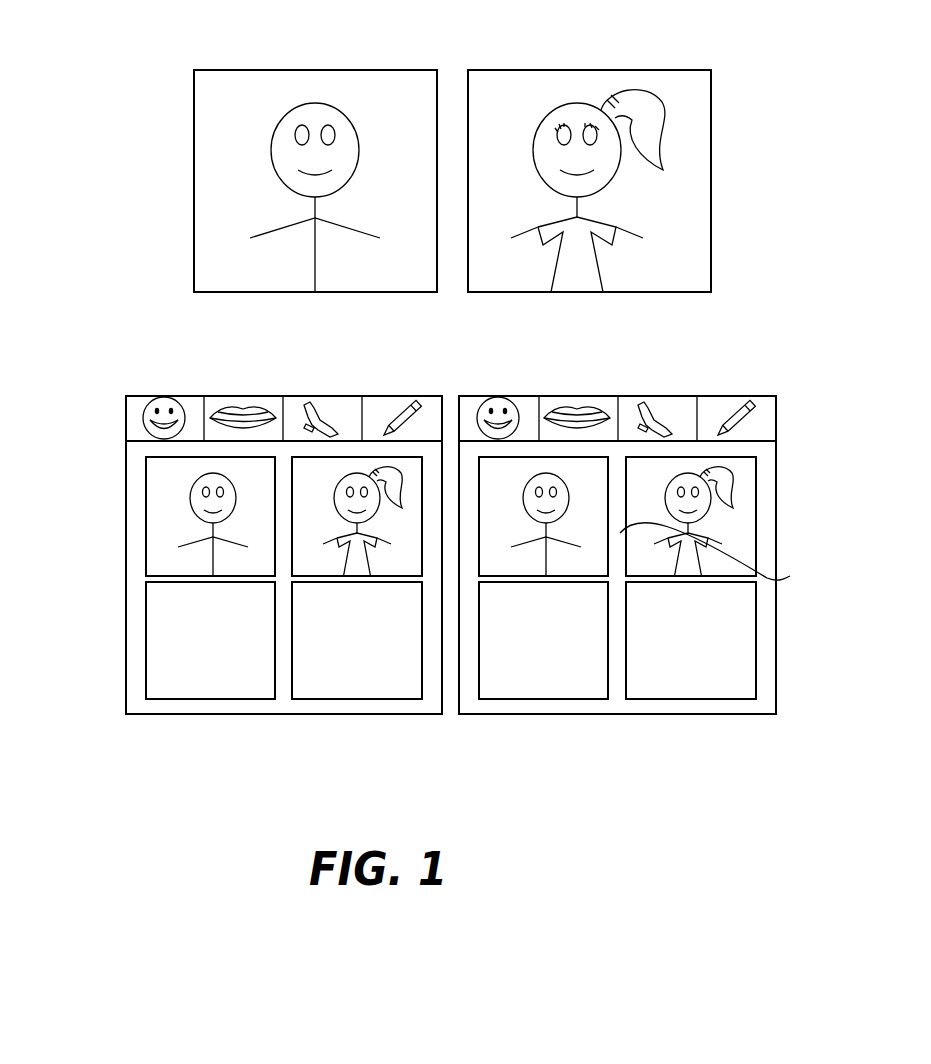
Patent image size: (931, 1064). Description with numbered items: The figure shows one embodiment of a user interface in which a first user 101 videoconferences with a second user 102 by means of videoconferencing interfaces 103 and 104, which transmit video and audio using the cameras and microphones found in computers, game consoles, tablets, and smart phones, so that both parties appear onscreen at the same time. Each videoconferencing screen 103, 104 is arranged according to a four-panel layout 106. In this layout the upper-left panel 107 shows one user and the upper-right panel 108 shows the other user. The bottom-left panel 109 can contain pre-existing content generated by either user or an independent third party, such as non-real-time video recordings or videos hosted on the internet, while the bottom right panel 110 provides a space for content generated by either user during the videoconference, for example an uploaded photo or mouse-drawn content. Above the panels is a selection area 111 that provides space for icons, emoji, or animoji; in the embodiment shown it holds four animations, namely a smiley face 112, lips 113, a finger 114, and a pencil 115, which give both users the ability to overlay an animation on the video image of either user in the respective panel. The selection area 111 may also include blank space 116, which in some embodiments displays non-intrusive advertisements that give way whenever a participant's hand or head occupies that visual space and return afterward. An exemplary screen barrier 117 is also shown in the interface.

The first user 101 is at (396, 70).
The second user 102 is at (673, 70).
The videoconferencing interface 103 is at (278, 555).
The videoconferencing interface 104 is at (647, 539).
The four-panel layout 106 is at (278, 555).
The upper-left panel 107 is at (178, 505).
The upper-right panel 108 is at (410, 467).
The bottom-left panel 109 is at (153, 648).
The bottom right panel 110 is at (405, 664).
The selection area 111 is at (258, 383).
The smiley face 112 is at (152, 400).
The lips 113 is at (220, 400).
The finger 114 is at (340, 420).
The pencil 115 is at (412, 410).
The blank space 116 is at (722, 448).
The screen barrier 117 is at (777, 508).